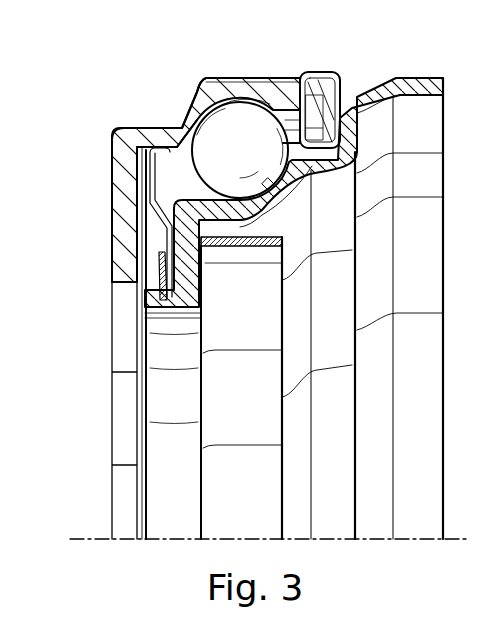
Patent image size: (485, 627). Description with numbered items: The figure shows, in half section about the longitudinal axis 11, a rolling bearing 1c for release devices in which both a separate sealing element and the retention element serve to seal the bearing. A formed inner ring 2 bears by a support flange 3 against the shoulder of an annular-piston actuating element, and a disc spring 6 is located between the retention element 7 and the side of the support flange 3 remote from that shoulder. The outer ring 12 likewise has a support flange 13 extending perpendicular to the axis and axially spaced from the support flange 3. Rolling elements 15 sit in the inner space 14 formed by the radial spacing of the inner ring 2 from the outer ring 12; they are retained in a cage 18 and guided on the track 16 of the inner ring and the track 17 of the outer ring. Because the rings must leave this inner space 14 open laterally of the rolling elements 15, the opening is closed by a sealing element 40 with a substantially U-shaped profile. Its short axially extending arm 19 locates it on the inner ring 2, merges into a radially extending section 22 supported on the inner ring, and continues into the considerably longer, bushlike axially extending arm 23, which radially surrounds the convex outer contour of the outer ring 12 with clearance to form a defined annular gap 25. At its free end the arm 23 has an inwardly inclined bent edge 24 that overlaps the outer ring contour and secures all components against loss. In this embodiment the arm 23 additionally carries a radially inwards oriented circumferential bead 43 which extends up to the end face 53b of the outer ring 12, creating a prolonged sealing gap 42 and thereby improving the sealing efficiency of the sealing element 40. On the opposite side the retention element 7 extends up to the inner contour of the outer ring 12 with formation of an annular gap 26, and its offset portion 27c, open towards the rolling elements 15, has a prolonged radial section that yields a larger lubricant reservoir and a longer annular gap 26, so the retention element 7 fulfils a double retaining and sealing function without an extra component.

The rolling bearing 1c is at (100, 243).
The inner ring 2 is at (423, 80).
The support flange 3 is at (203, 270).
The disc spring 6 is at (154, 275).
The retention element 7 is at (178, 240).
The axis of rotation 11 is at (82, 538).
The outer ring 12 is at (133, 135).
The support flange 13 is at (121, 258).
The inner space 14 is at (275, 78).
The rolling elements 15 is at (224, 153).
The track 16 is at (300, 217).
The track 17 is at (190, 124).
The cage 18 is at (153, 130).
The axially extending arm 19 is at (355, 165).
The radially extending section 22 is at (345, 108).
The axially extending arm 23 is at (257, 78).
The inwardly inclined bent edge 24 is at (200, 90).
The annular gap 25 is at (218, 78).
The annular gap 26 is at (118, 143).
The offset portion 27c is at (146, 181).
The sealing element 40 is at (332, 70).
The sealing gap 42 is at (286, 108).
The circumferential bead 43 is at (355, 143).
The end face 53b is at (290, 198).